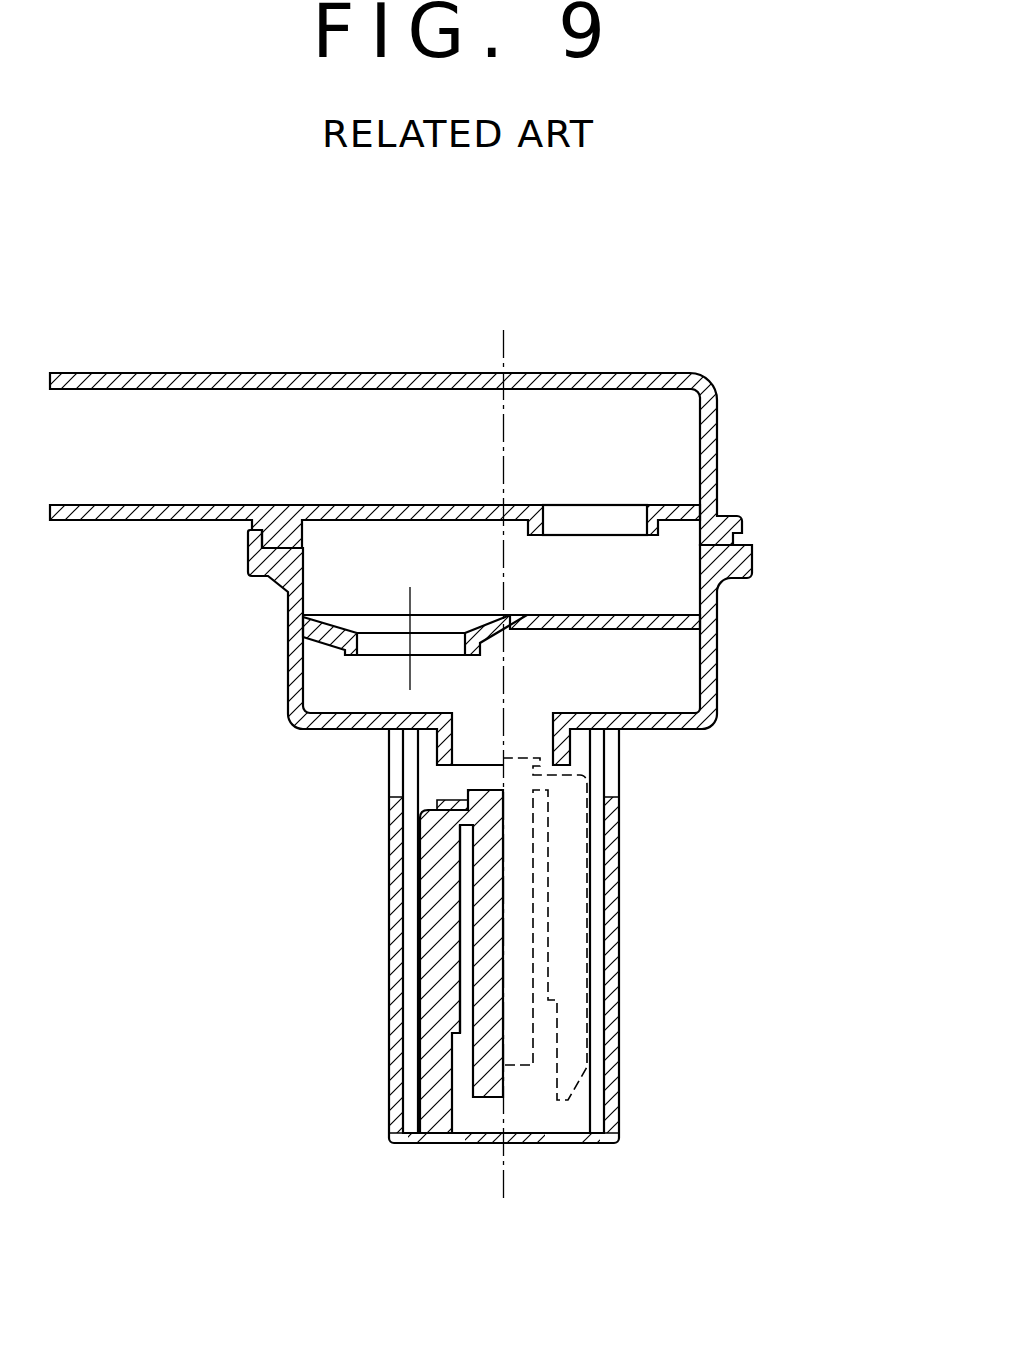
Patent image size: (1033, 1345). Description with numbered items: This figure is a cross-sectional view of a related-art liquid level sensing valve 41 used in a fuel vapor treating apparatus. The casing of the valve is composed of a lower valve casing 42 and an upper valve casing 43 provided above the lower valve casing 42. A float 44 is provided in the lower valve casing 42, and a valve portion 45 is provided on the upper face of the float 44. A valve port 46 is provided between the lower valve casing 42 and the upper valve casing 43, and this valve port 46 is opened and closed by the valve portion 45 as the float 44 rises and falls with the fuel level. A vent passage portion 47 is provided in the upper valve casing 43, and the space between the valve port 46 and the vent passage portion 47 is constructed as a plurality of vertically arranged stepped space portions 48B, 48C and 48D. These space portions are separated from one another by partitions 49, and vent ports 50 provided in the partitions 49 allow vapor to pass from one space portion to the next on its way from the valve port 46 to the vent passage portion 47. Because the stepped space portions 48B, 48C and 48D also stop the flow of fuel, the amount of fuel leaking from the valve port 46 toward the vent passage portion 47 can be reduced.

The liquid level sensing valve 41 is at (622, 948).
The lower valve casing 42 is at (397, 977).
The upper valve casing 43 is at (535, 375).
The float 44 is at (442, 1008).
The valve portion 45 is at (420, 835).
The valve port 46 is at (447, 742).
The vent passage portion 47 is at (147, 513).
The stepped space portion 48B is at (600, 683).
The stepped space portion 48C is at (600, 582).
The stepped space portion 48D is at (597, 453).
The partition 49 is at (385, 505).
The vent port 50 is at (605, 523).